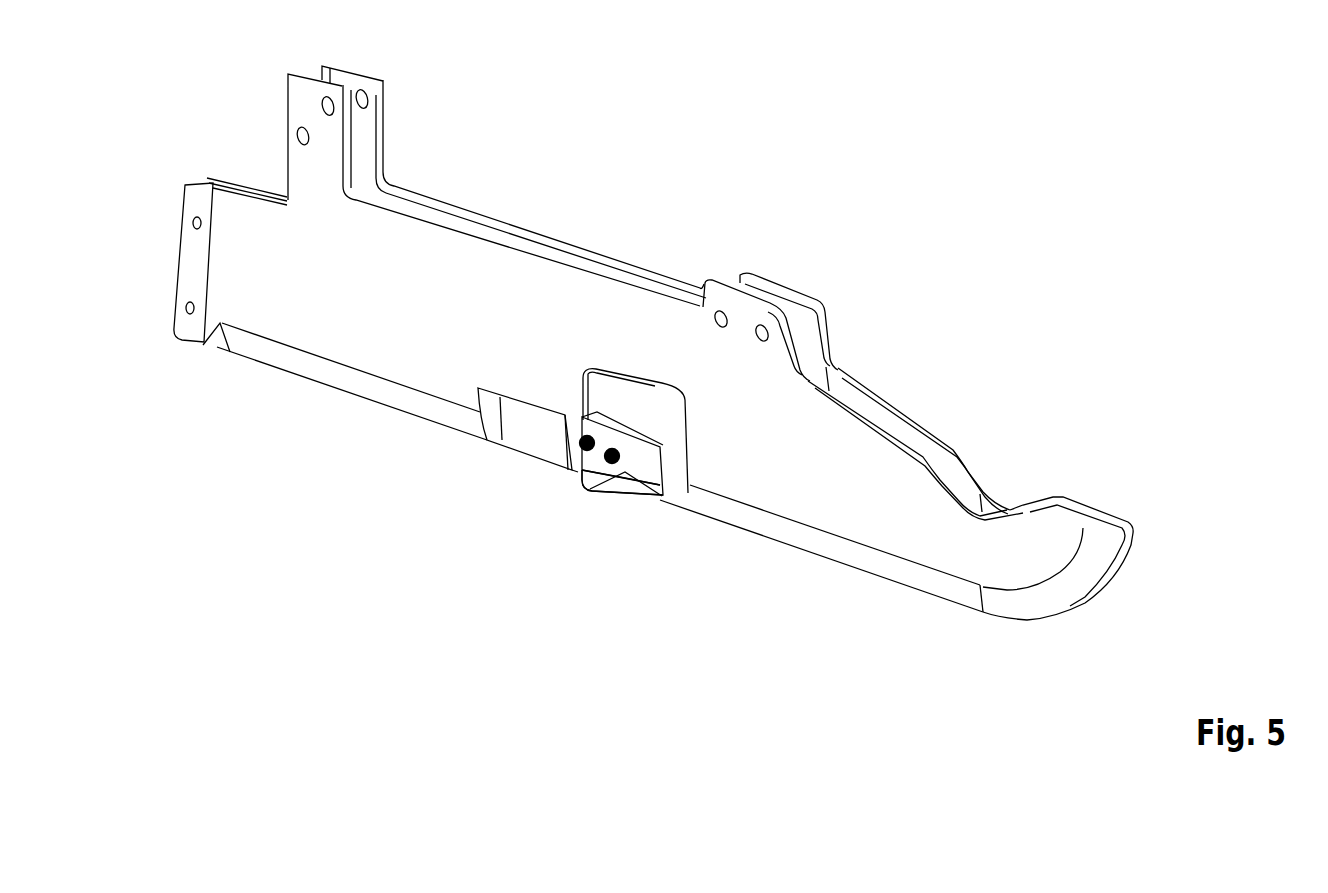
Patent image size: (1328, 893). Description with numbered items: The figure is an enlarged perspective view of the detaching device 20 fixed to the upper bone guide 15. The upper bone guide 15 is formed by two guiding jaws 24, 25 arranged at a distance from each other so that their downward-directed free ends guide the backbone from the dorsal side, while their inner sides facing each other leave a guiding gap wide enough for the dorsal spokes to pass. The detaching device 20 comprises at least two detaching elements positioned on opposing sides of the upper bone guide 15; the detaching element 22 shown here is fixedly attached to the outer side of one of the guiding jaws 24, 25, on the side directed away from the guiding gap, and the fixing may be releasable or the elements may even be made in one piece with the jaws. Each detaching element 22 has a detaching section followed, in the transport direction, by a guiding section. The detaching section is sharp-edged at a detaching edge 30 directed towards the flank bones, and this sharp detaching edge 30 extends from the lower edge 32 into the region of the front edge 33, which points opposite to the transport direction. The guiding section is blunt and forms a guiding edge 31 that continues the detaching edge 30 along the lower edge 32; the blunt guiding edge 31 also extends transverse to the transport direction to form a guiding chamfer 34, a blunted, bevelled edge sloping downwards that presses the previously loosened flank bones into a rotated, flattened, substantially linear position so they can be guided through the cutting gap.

The upper bone guide 15 is at (500, 292).
The detaching device 20 is at (613, 403).
The detaching element 22 is at (631, 440).
The guiding jaw 24 is at (237, 268).
The guiding jaw 25 is at (384, 140).
The detaching edge 30 is at (650, 510).
The guiding edge 31 is at (597, 503).
The lower edge 32 is at (642, 512).
The front edge 33 is at (670, 476).
The guiding chamfer 34 is at (612, 514).